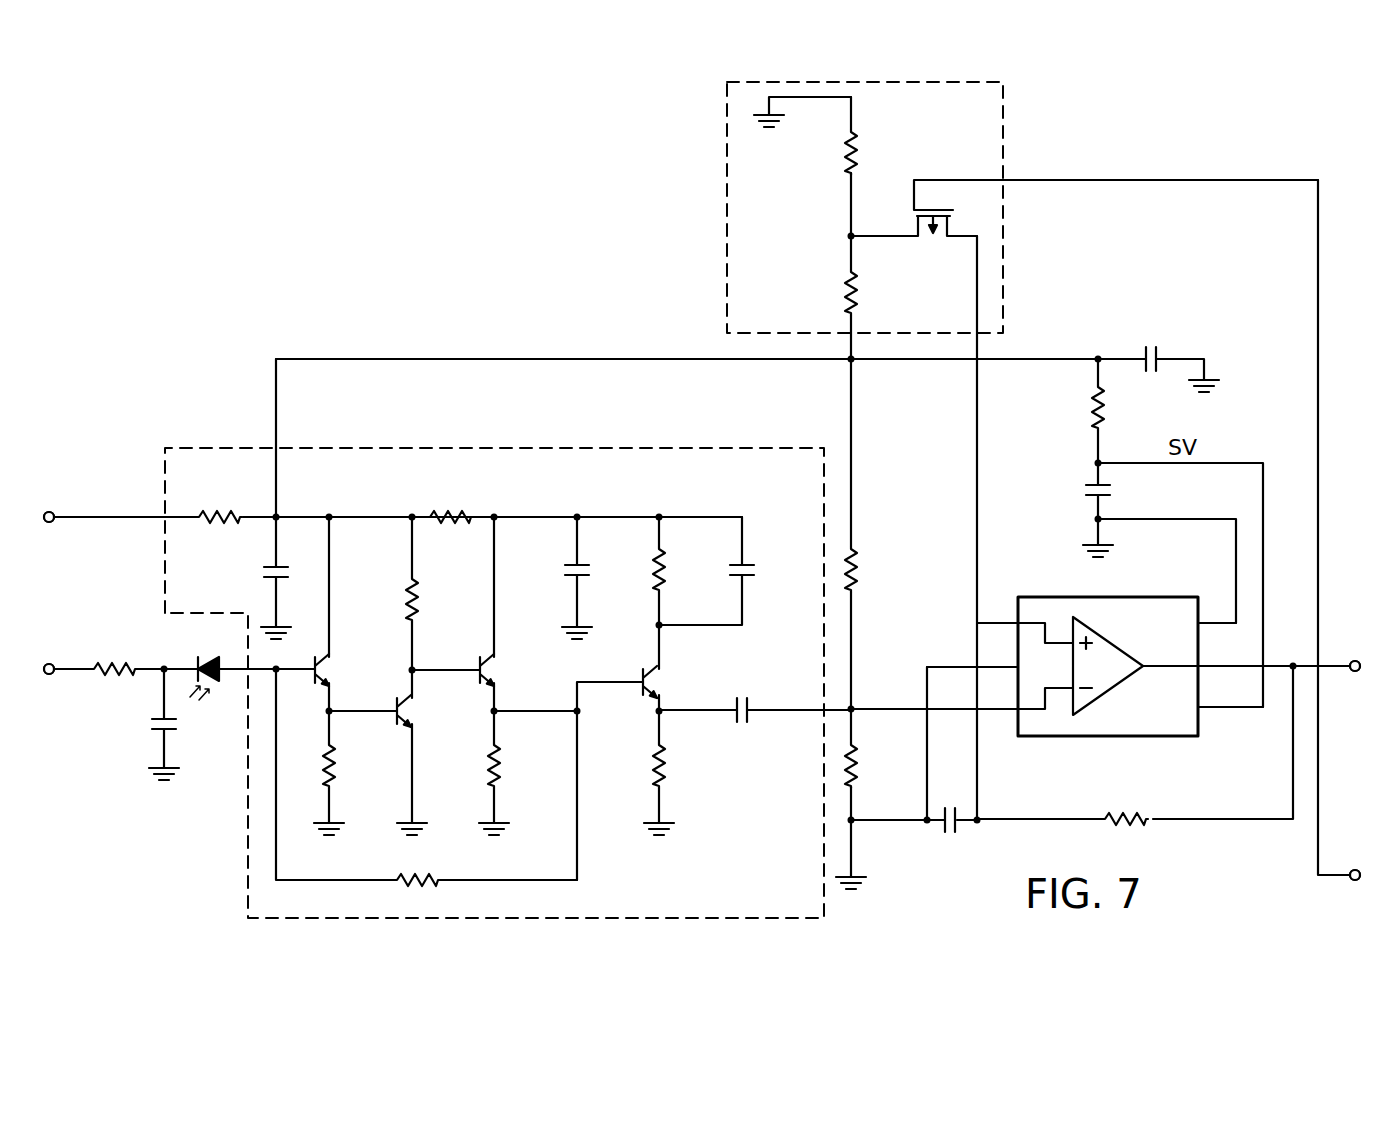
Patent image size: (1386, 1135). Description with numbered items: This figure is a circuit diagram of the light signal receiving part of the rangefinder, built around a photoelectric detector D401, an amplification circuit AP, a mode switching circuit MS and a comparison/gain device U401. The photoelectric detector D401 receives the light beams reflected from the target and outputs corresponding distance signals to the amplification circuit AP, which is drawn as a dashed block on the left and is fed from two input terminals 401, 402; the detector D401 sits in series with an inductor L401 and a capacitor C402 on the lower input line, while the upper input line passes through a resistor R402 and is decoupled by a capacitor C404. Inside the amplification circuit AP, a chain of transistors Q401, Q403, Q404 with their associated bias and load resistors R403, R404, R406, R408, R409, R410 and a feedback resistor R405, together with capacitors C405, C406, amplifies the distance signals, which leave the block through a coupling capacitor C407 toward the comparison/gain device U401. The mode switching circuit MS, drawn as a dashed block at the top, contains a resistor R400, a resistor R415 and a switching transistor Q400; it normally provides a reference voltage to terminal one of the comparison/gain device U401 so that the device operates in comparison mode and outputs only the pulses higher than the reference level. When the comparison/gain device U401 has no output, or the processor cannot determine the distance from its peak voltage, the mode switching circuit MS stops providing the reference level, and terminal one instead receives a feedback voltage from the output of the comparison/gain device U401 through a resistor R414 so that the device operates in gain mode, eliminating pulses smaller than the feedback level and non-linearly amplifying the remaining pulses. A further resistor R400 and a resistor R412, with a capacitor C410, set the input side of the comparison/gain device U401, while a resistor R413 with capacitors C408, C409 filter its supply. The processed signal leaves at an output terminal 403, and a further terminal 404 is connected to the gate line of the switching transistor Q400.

The mode switching circuit MS is at (727, 207).
The amplification circuit AP is at (248, 852).
The resistor R400 is at (882, 361).
The resistor R415 is at (882, 292).
The MOSFET transistor Q400 is at (1084, 223).
The capacitor C408 is at (1158, 357).
The resistor R413 is at (1129, 411).
The capacitor C409 is at (1126, 510).
The comparison/gain device U401 is at (1120, 754).
The resistor R414 is at (1135, 745).
The resistor R412 is at (882, 765).
The capacitor C410 is at (915, 762).
The input terminal 401 is at (49, 502).
The input terminal 402 is at (49, 654).
The output terminal A 403 is at (1357, 664).
The terminal 404 is at (1357, 860).
The resistor R402 is at (218, 503).
The resistor R406 is at (452, 502).
The capacitor C404 is at (247, 578).
The inductor L401 is at (110, 654).
The capacitor C402 is at (192, 724).
The photoelectric detector D401 is at (228, 665).
The transistor Q401 is at (355, 614).
The resistor R403 is at (355, 773).
The transistor Q404 is at (561, 730).
The resistor R404 is at (443, 593).
The transistor Q403 is at (520, 614).
The resistor R408 is at (521, 773).
The capacitor C405 is at (605, 578).
The resistor R409 is at (691, 571).
The capacitor C406 is at (736, 571).
The resistor R410 is at (686, 773).
The capacitor C407 is at (755, 722).
The resistor R405 is at (426, 791).